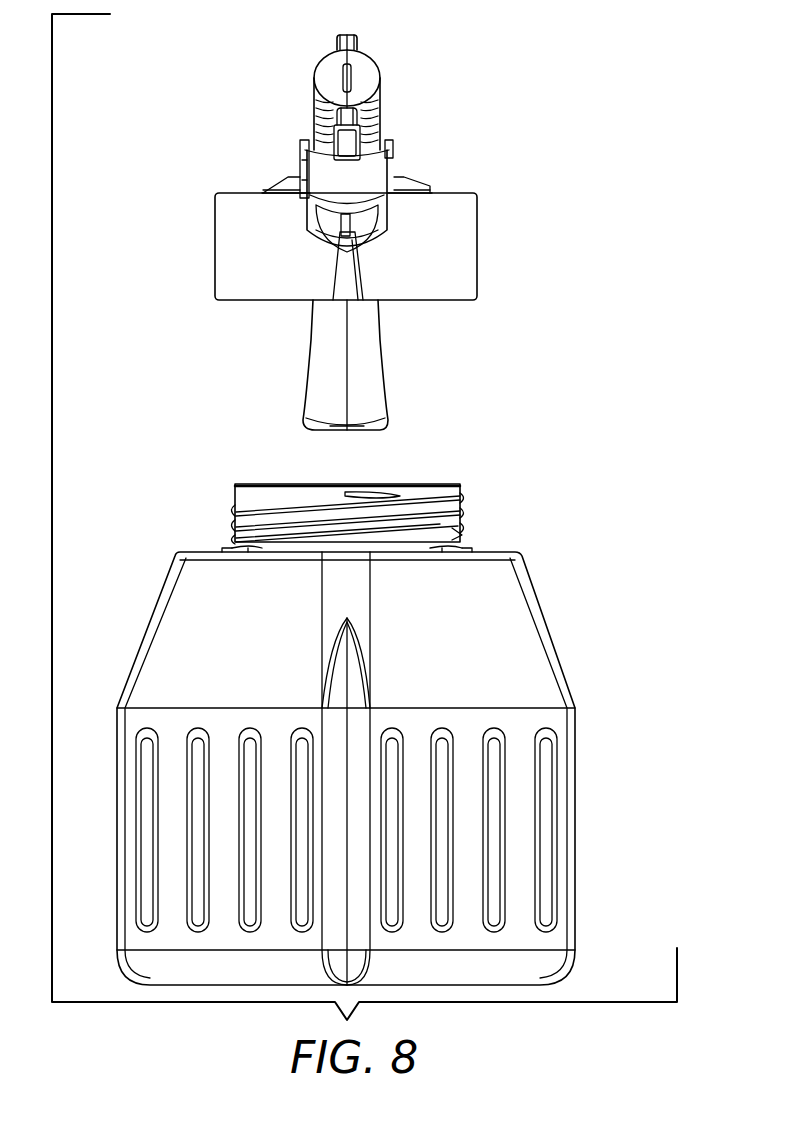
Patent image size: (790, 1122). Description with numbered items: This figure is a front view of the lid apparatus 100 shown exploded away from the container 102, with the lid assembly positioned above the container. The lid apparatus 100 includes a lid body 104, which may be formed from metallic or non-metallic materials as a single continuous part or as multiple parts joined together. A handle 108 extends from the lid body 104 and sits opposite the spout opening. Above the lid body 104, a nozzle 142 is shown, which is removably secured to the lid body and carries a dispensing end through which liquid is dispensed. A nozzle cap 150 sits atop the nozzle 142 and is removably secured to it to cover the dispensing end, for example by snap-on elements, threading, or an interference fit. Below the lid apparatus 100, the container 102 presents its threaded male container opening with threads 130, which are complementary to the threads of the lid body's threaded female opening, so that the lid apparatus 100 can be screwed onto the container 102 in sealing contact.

The lid apparatus 100 is at (584, 101).
The container 102 is at (552, 641).
The lid body 104 is at (478, 243).
The handle 108 is at (385, 378).
The threads 130 is at (462, 530).
The nozzle 142 is at (330, 166).
The nozzle cap 150 is at (380, 72).